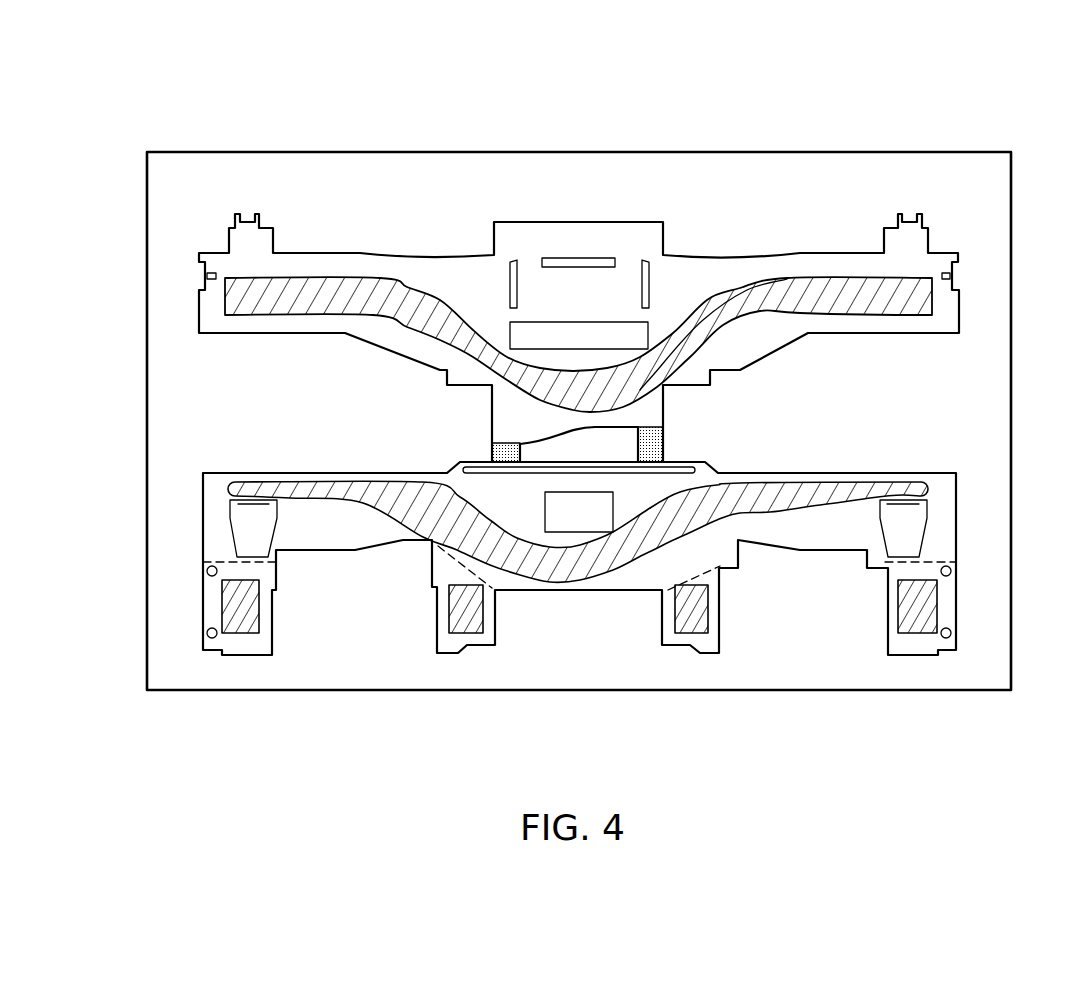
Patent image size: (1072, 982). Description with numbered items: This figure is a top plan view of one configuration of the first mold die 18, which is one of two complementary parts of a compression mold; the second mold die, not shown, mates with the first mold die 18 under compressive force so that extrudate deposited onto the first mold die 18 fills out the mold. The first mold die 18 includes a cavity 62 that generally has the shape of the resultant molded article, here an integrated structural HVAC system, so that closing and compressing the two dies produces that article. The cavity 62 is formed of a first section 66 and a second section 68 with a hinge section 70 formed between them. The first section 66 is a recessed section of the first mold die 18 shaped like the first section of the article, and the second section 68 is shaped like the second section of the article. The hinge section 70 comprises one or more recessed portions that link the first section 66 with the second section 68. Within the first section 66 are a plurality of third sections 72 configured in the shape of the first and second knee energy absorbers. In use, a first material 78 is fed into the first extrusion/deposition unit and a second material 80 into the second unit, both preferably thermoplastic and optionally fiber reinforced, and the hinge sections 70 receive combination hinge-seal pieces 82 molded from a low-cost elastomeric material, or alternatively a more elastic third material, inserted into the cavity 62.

The first mold die 18 is at (636, 151).
The cavity 62 is at (582, 432).
The first section 66 is at (568, 593).
The second section 68 is at (706, 253).
The hinge section 70 is at (674, 452).
The third sections 72 is at (240, 648).
The first material 78 is at (915, 293).
The second material 80 is at (928, 487).
The hinge-seal pieces 82 is at (490, 453).